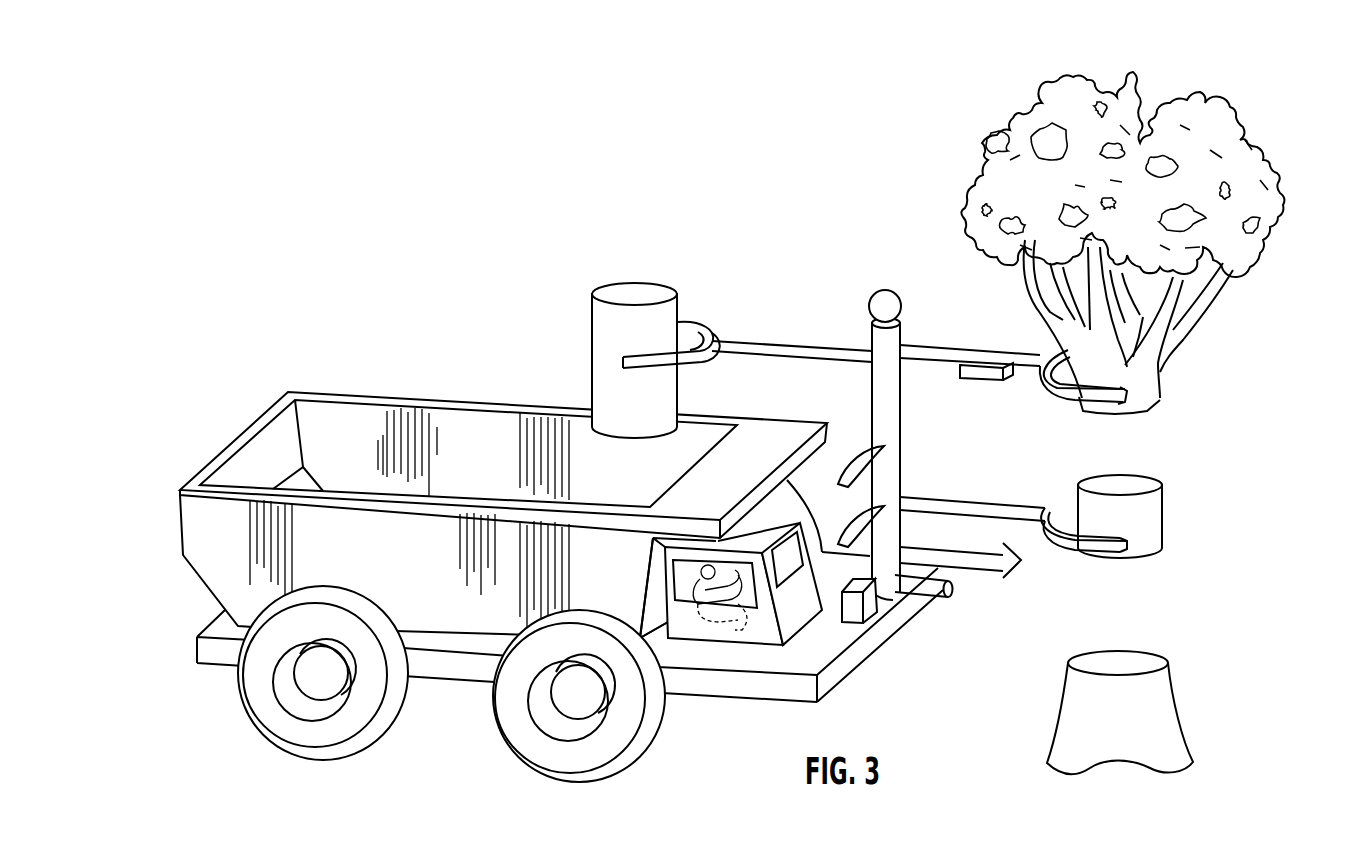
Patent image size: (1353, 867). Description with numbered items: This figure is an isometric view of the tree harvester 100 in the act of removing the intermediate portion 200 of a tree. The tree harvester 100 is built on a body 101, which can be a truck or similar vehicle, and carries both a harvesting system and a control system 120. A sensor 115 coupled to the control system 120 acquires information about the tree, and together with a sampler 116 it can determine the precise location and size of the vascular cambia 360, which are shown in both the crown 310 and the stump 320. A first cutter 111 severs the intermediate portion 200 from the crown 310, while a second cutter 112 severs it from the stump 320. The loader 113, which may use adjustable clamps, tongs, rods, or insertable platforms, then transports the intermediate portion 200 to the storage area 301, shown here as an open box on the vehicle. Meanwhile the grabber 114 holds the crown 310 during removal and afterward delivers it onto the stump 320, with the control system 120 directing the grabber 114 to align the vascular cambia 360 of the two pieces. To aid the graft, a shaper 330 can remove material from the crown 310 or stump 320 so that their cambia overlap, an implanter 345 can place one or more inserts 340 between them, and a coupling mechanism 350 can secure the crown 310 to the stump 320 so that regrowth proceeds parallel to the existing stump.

The tree harvester 100 is at (420, 364).
The body 101 is at (452, 620).
The storage area 301 is at (335, 440).
The intermediate portion 200 is at (607, 282).
The loader 113 is at (790, 340).
The sensor 115 is at (866, 304).
The first cutter 111 is at (863, 453).
The second cutter 112 is at (847, 528).
The grabber 114 is at (950, 342).
The coupling mechanism 350 is at (987, 388).
The crown 310 is at (1231, 105).
The vascular cambia 360 is at (1088, 418).
The inserts 340 is at (1167, 523).
The implanter 345 is at (1000, 506).
The shaper 330 is at (1022, 583).
The sampler 116 is at (938, 596).
The control system 120 is at (868, 606).
The stump 320 is at (1180, 716).